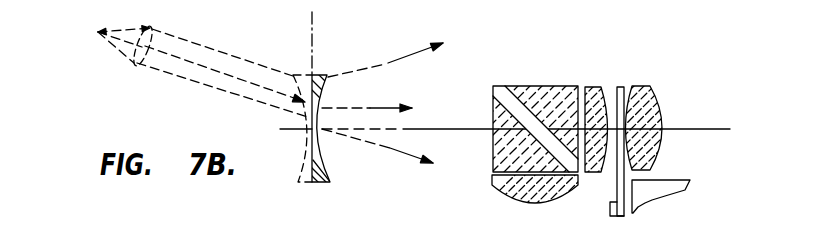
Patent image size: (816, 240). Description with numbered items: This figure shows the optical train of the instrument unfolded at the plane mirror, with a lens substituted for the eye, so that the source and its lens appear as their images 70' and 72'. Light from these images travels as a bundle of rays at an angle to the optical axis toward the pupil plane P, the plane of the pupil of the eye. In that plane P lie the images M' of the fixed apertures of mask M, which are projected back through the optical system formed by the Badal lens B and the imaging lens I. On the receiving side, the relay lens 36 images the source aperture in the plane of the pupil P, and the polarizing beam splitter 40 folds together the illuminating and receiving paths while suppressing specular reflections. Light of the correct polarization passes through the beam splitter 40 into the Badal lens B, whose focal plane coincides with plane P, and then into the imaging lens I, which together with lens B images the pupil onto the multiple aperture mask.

The image of the source 70' is at (73, 17).
The image of the source lens 72' is at (174, 35).
The pupil plane of the eye P is at (313, 23).
The images of the apertures of mask M M' is at (336, 129).
The polarizing beam splitter 40 is at (524, 86).
The Badal lens B is at (594, 87).
The imaging lens I is at (652, 86).
The relay lens 36 is at (492, 188).